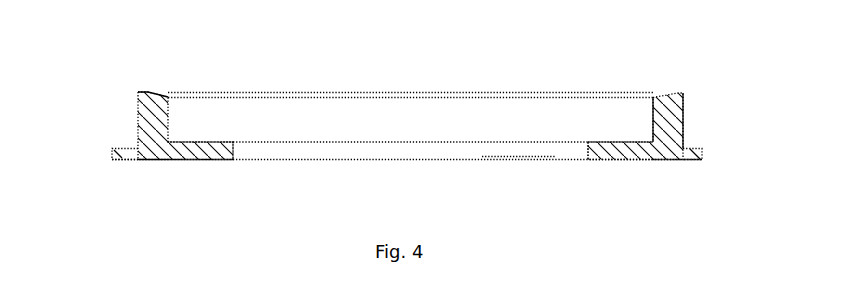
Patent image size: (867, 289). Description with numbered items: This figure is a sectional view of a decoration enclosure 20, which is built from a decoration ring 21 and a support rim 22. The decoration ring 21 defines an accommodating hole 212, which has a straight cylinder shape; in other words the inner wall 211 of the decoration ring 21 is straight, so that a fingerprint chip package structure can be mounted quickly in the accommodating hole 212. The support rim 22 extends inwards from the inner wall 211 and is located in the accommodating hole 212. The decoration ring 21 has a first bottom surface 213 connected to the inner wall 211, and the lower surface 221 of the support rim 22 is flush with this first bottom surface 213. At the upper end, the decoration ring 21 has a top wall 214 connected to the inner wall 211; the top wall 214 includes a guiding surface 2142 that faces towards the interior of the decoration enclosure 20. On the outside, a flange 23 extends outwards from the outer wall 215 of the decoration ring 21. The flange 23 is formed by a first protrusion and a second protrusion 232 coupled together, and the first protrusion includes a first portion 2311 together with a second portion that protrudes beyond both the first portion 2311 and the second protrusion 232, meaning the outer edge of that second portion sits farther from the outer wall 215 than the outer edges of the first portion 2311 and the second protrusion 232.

The decoration enclosure 20 is at (282, 55).
The decoration ring 21 is at (676, 110).
The inner wall 211 is at (653, 112).
The accommodating hole 212 is at (485, 108).
The first bottom surface 213 is at (142, 160).
The top wall 214 is at (140, 91).
The guiding surface 2142 is at (152, 92).
The outer wall 215 is at (684, 116).
The support rim 22 is at (592, 159).
The lower surface 221 is at (200, 160).
The flange 23 is at (683, 159).
The first portion 2311 is at (122, 156).
The second protrusion 232 is at (702, 158).